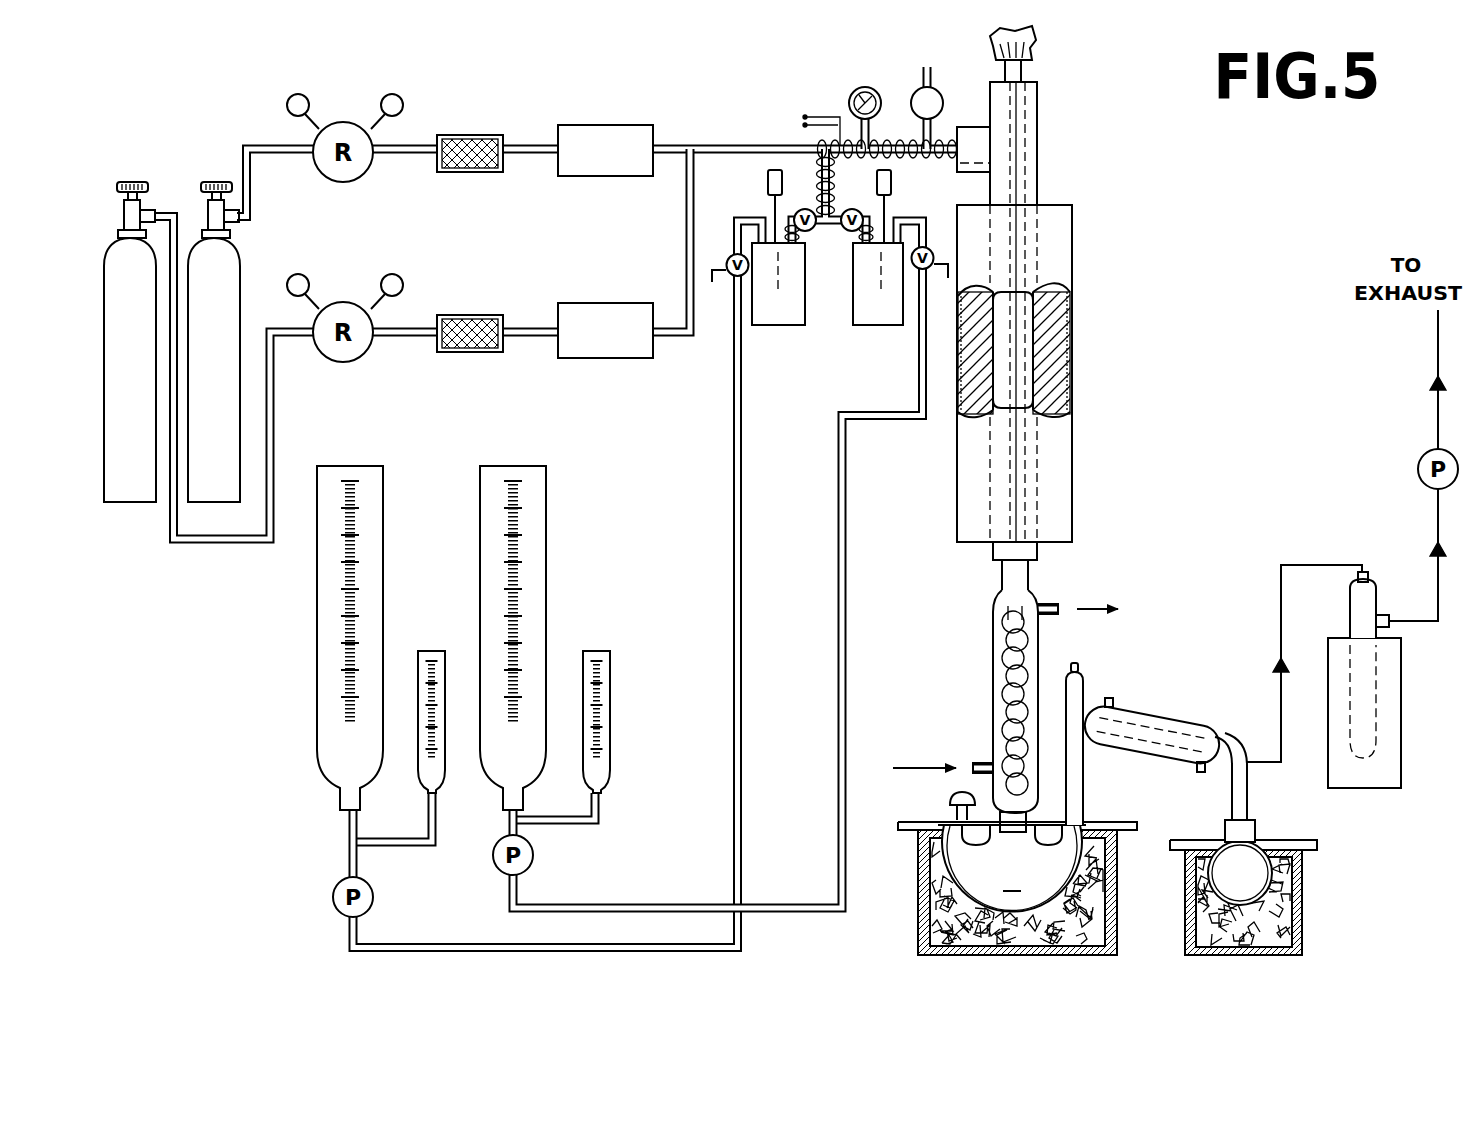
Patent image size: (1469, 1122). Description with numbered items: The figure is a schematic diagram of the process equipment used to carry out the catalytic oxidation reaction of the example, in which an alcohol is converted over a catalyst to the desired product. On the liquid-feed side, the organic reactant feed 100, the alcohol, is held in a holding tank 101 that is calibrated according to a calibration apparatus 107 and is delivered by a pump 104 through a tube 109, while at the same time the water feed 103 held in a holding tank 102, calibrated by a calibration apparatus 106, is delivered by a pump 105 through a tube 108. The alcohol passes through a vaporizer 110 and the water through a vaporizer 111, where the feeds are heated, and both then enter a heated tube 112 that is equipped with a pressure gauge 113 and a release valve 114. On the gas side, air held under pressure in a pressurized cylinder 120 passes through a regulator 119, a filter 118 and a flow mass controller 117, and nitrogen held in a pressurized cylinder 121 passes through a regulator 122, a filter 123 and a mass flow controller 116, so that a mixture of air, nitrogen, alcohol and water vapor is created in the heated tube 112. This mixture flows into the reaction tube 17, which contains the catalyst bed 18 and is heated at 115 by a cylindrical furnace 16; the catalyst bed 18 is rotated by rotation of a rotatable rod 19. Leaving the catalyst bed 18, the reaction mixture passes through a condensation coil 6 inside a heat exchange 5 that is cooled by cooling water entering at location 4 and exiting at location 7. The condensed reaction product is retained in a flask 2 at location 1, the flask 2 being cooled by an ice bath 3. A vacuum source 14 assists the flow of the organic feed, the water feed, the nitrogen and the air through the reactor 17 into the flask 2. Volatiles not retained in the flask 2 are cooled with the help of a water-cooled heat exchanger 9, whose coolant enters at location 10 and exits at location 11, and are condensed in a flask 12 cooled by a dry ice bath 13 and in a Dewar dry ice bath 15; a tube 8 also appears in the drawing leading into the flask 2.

The location 1 is at (977, 852).
The flask 2 is at (1012, 879).
The ice bath 3 is at (1106, 936).
The location 4 is at (983, 762).
The heat exchange 5 is at (985, 701).
The condensation coil 6 is at (1005, 611).
The location 7 is at (1052, 603).
The gas inlet tube 8 is at (1081, 682).
The heat exchanger 9 is at (1125, 753).
The location 10 is at (1198, 773).
The location 11 is at (1114, 705).
The flask 12 is at (1253, 860).
The dry ice bath 13 is at (1302, 905).
The vacuum source 14 is at (1417, 472).
The Dewar dry ice bath 15 is at (1397, 752).
The cylindrical furnace 16 is at (1072, 272).
The reaction tube 17 is at (1062, 300).
The catalyst bed 18 is at (1035, 360).
The rotatable rod 19 is at (1023, 42).
The organic reactant feed 100 is at (310, 568).
The holding tank 101 is at (386, 480).
The holding tank 102 is at (550, 490).
The water feed 103 is at (540, 556).
The pump 104 is at (333, 897).
The pump 105 is at (533, 855).
The calibration apparatus 106 is at (597, 652).
The calibration apparatus 107 is at (432, 652).
The tube 108 is at (675, 905).
The tube 109 is at (433, 948).
The vaporizer 110 is at (790, 316).
The vaporizer 111 is at (874, 316).
The heated tube 112 is at (935, 154).
The pressure gauge 113 is at (853, 93).
The release valve 114 is at (913, 96).
The location 115 is at (972, 124).
The mass flow controller 116 is at (602, 302).
The flow mass controller 117 is at (602, 124).
The filter 118 is at (470, 133).
The regulator 119 is at (343, 182).
The pressurized cylinder 120 is at (228, 276).
The pressurized cylinder 121 is at (132, 490).
The regulator 122 is at (343, 362).
The filter 123 is at (470, 314).